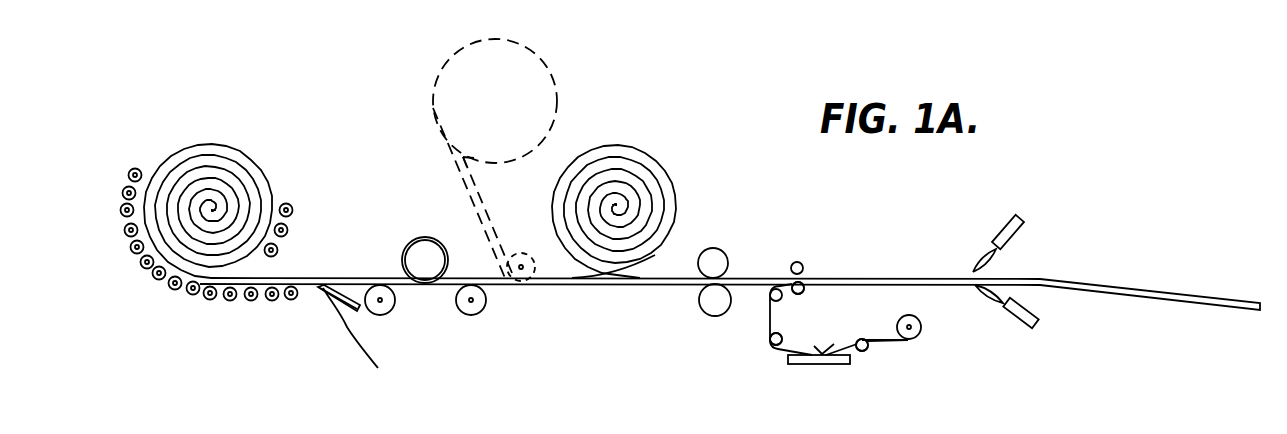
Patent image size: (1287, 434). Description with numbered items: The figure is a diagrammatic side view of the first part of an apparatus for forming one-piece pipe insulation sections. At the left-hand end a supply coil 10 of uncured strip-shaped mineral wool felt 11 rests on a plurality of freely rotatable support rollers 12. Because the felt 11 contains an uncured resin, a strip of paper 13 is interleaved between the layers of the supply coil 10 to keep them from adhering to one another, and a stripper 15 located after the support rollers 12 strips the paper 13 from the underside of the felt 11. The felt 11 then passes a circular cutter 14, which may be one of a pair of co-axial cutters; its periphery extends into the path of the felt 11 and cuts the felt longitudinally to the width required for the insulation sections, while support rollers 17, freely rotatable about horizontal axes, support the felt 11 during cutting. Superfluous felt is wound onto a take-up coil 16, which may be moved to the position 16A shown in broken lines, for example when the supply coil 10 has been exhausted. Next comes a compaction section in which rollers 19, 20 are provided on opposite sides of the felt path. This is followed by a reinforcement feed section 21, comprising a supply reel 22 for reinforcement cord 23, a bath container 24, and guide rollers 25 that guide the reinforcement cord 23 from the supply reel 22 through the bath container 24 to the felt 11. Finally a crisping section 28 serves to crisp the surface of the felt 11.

The supply coil 10 is at (247, 153).
The felt 11 is at (293, 278).
The support rollers 12 is at (176, 290).
The strip of paper 13 is at (343, 328).
The circular cutter 14 is at (430, 247).
The stripper 15 is at (358, 313).
The take-up coil 16 is at (673, 183).
The take-up coil position 16A is at (543, 106).
The support rollers 17 is at (393, 306).
The compaction roller 19 is at (723, 253).
The compaction roller 20 is at (710, 309).
The reinforcement feed section 21 is at (774, 364).
The supply reel 22 is at (922, 328).
The reinforcement cord 23 is at (888, 340).
The bath container 24 is at (843, 364).
The guide rollers 25 is at (795, 294).
The crisping section 28 is at (969, 248).